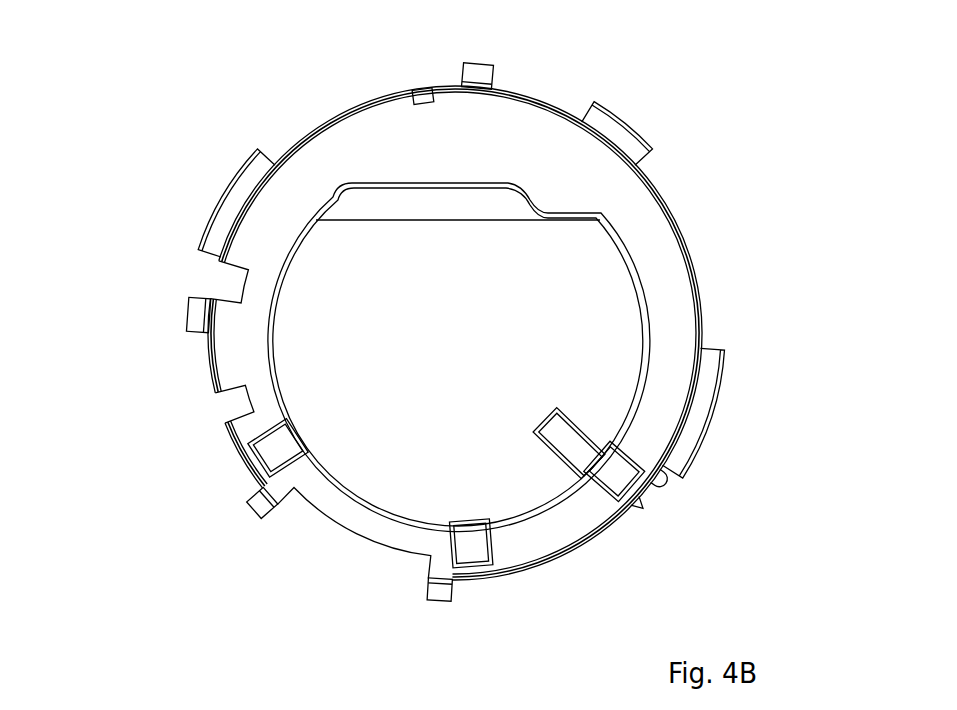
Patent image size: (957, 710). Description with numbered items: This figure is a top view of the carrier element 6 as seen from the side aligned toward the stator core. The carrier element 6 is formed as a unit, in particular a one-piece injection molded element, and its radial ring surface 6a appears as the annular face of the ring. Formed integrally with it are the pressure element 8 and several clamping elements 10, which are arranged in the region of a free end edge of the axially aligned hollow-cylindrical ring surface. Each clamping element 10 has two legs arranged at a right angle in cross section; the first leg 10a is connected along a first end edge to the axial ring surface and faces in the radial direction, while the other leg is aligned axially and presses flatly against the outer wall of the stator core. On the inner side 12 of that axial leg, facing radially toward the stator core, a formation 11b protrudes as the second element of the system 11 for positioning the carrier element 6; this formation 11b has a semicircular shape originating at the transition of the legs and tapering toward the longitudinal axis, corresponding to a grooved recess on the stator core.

The carrier element 6 is at (790, 124).
The radial ring surface 6a is at (674, 311).
The pressure element 8 is at (548, 424).
The clamping element 10 is at (437, 329).
The first leg 10a is at (476, 75).
The system for positioning the carrier element 11 is at (699, 515).
The formation 11b is at (672, 494).
The inner side 12 is at (635, 505).